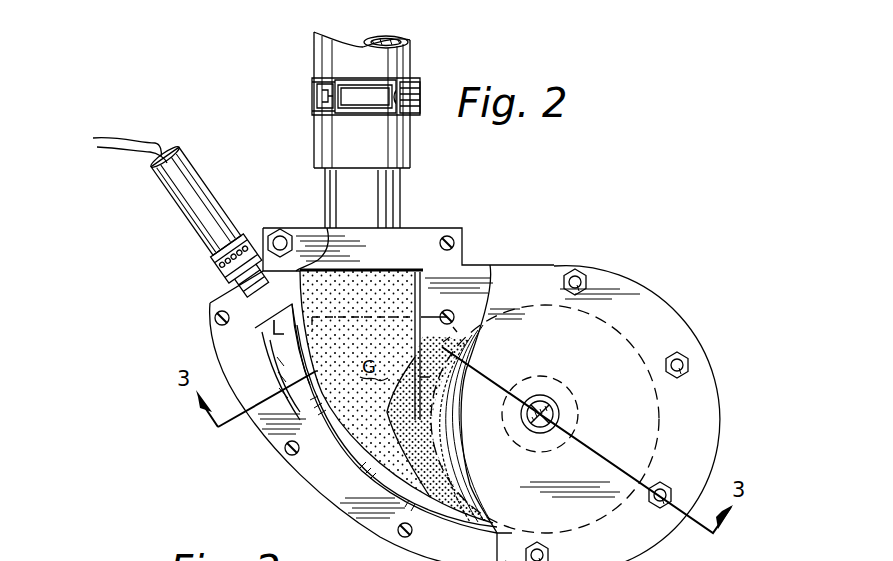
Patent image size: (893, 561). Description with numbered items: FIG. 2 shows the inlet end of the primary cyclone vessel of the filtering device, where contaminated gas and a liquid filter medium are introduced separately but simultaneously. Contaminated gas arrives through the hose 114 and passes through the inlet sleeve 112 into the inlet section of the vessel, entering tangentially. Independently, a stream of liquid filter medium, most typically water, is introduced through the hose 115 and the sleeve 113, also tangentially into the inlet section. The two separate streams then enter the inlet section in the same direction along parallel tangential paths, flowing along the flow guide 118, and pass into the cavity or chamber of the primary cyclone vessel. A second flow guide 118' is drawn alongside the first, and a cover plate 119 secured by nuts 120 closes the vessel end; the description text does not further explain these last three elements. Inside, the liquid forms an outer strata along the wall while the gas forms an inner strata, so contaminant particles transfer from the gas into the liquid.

The inlet sleeve 112 is at (390, 208).
The sleeve 113 is at (243, 291).
The hose 114 is at (349, 47).
The hose 115 is at (112, 149).
The flow guide 118 is at (353, 416).
The inner ring 118' is at (377, 397).
The housing cover 119 is at (558, 358).
The nuts 120 is at (578, 270).